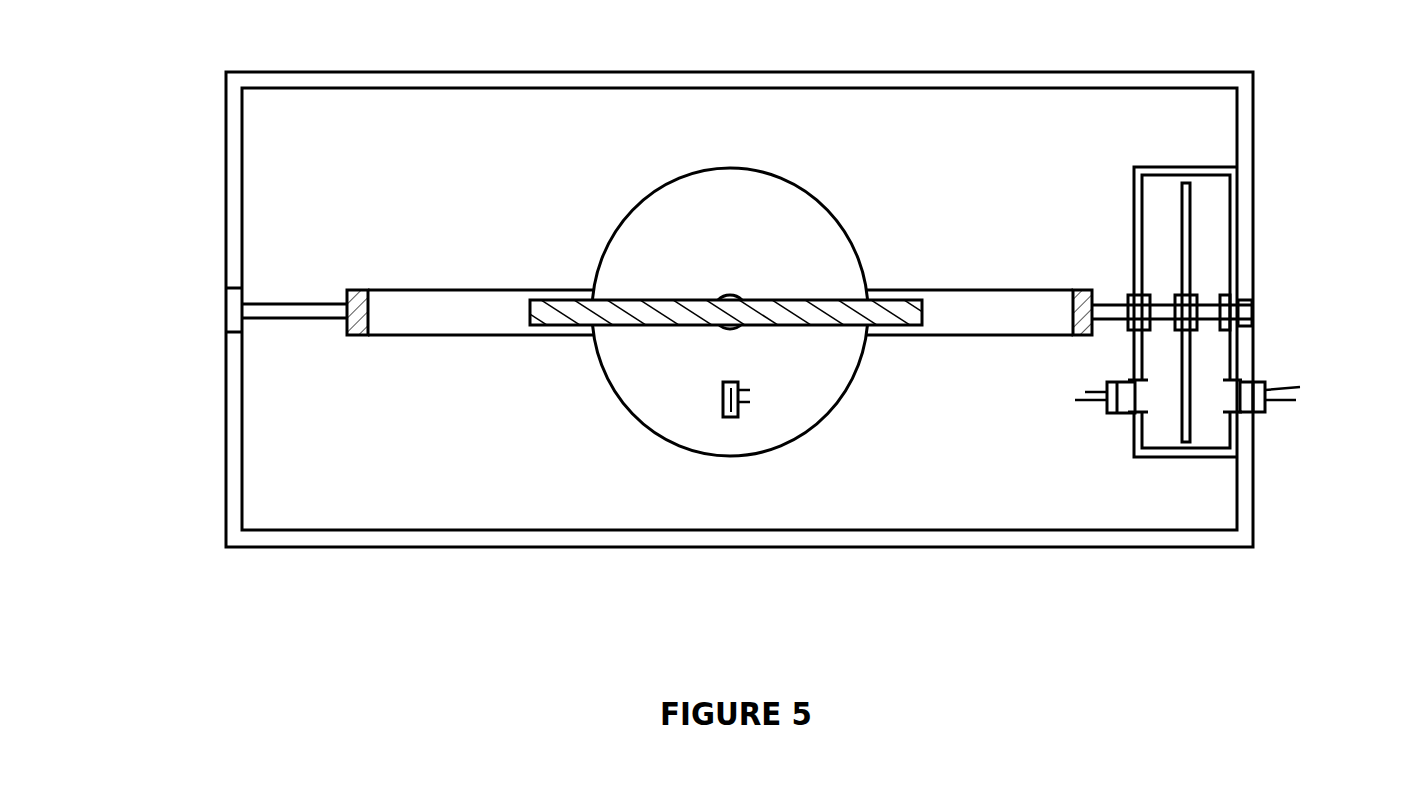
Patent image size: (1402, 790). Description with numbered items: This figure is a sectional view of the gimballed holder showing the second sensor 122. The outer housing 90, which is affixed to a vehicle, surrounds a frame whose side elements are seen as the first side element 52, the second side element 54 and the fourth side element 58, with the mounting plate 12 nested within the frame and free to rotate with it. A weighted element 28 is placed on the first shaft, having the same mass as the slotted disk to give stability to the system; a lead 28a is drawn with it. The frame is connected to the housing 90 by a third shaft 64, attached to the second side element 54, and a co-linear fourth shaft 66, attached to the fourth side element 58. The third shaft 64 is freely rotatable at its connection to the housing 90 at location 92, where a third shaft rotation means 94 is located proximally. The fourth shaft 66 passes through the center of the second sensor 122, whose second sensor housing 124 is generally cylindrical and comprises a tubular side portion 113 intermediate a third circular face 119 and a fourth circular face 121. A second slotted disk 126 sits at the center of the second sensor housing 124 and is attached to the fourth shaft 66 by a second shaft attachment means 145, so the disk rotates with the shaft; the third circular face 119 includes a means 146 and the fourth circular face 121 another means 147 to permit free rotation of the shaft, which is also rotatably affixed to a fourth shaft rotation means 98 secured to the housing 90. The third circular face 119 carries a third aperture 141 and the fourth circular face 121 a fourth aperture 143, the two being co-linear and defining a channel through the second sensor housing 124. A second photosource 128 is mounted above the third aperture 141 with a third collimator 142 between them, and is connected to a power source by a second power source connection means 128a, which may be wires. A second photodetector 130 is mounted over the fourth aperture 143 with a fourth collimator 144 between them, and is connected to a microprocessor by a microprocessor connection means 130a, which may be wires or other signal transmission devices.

The mounting plate 12 is at (832, 303).
The weighted element 28 is at (723, 408).
The sensor lead 28a is at (743, 405).
The first side element 52 is at (947, 292).
The second side element 54 is at (358, 302).
The fourth side element 58 is at (1082, 315).
The third shaft 64 is at (285, 304).
The fourth shaft 66 is at (1118, 312).
The housing 90 is at (374, 540).
The location 92 is at (236, 288).
The third shaft rotation means 94 is at (233, 315).
The fourth shaft rotation means 98 is at (1253, 292).
The tubular side portion 113 is at (1192, 304).
The third circular face 119 is at (1137, 255).
The fourth circular face 121 is at (1230, 257).
The second sensor 122 is at (1200, 167).
The second sensor housing 124 is at (1190, 458).
The second slotted disk 126 is at (1184, 230).
The second photosource 128 is at (1105, 403).
The second power source connection means 128a is at (1090, 392).
The second photodetector 130 is at (1265, 405).
The microprocessor connection means 130a is at (1280, 391).
The third aperture 141 is at (1128, 412).
The third collimator 142 is at (1122, 382).
The fourth aperture 143 is at (1255, 382).
The fourth collimator 144 is at (1250, 412).
The second shaft attachment means 145 is at (1190, 330).
The means to permit free rotation 146 is at (1144, 330).
The another means to permit free rotation 147 is at (1222, 297).